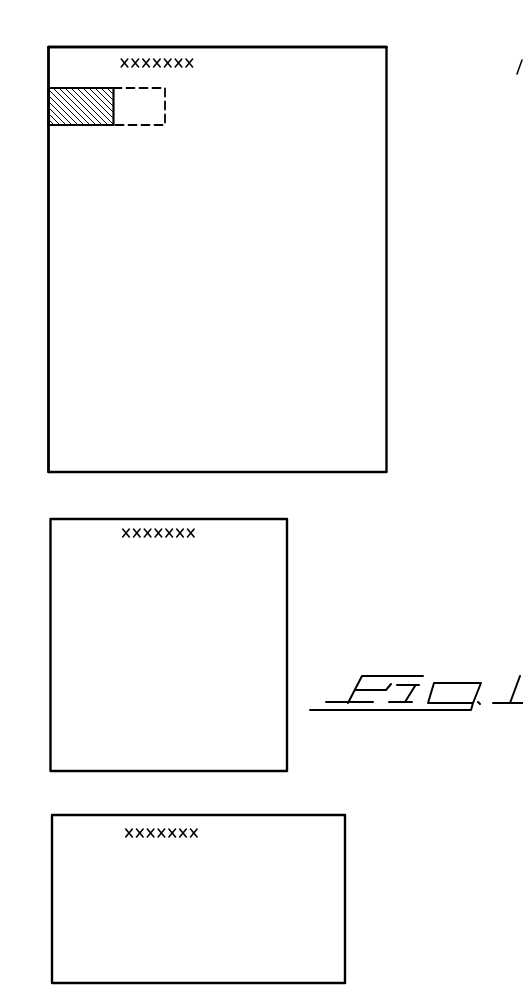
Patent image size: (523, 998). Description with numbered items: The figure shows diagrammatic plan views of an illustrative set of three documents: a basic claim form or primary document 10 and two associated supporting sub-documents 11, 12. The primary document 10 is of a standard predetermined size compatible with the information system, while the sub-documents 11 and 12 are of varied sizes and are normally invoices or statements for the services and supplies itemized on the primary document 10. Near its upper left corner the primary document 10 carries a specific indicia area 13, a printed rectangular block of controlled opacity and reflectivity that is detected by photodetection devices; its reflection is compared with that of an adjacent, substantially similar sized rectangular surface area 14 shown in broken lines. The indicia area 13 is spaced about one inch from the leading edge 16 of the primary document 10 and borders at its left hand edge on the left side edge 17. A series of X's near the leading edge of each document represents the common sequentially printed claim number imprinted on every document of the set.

The primary document 10 is at (241, 267).
The sub-document 11 is at (182, 665).
The sub-document 12 is at (191, 914).
The specific indicia area 13 is at (87, 126).
The rectangular surface area 14 is at (124, 126).
The leading edge 16 is at (233, 21).
The left side edge 17 is at (48, 205).